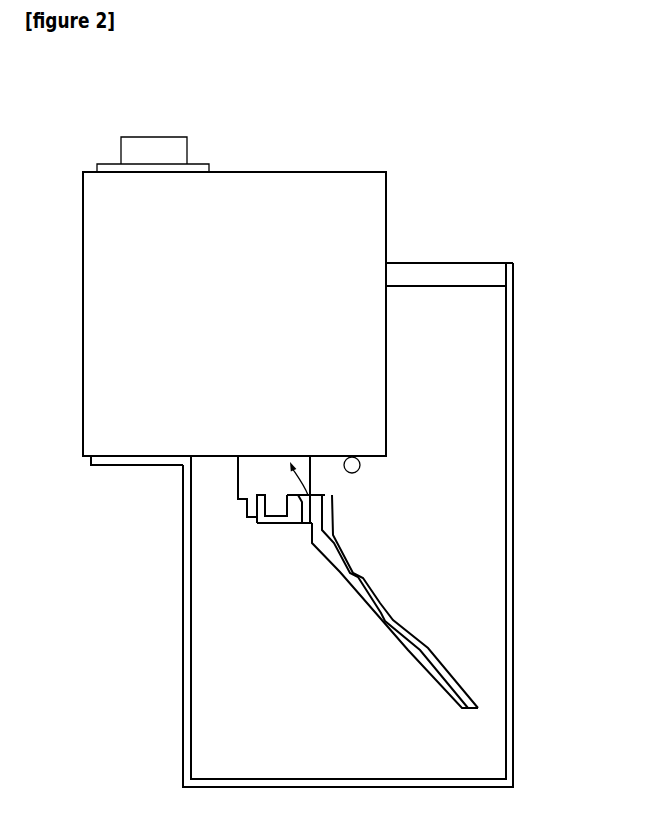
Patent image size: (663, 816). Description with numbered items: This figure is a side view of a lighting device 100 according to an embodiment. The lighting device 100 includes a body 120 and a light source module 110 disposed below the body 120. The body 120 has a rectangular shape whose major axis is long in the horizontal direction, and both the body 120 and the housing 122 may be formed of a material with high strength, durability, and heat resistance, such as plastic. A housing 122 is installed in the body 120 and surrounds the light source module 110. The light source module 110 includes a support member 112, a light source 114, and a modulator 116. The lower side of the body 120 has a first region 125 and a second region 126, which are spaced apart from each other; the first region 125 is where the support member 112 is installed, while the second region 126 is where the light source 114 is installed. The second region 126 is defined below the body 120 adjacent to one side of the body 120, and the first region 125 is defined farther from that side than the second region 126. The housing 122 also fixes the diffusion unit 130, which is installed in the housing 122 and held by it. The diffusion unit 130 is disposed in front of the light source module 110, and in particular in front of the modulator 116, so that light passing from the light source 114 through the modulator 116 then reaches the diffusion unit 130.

The lighting device 100 is at (65, 103).
The light source module 110 is at (90, 478).
The support member 112 is at (239, 479).
The light source 114 is at (348, 458).
The modulator 116 is at (321, 571).
The body 120 is at (318, 172).
The housing 122 is at (440, 262).
The first region 125 is at (325, 496).
The second region 126 is at (365, 471).
The diffusion unit 130 is at (514, 662).